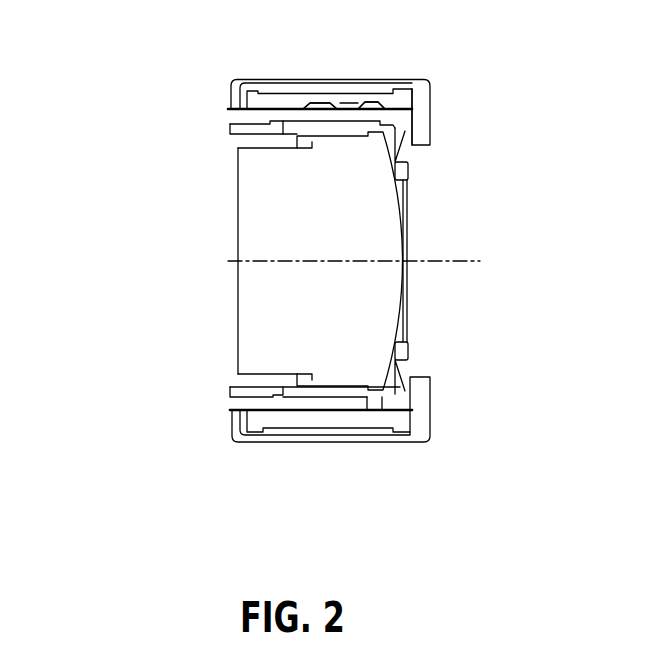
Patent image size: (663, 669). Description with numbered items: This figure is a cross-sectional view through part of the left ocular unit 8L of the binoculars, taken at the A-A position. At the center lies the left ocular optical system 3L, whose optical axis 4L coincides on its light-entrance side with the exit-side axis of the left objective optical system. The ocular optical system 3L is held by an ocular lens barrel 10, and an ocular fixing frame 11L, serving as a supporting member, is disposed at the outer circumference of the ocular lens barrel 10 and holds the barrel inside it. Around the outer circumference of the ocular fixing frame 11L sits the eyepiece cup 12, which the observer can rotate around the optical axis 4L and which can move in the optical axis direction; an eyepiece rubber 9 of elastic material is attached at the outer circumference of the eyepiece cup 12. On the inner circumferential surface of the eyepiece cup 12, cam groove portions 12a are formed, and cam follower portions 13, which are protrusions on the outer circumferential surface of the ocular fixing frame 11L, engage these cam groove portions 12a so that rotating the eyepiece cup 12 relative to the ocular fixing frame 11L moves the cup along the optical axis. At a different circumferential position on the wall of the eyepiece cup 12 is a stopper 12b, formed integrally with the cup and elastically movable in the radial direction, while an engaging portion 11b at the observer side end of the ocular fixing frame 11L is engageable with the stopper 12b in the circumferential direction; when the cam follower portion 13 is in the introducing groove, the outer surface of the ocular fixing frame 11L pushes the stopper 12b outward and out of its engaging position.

The left ocular optical system 3L is at (250, 228).
The optical axis of the left ocular optical system 4L is at (415, 265).
The left ocular unit 8L is at (183, 416).
The eyepiece rubber 9 is at (320, 432).
The ocular lens barrel 10 is at (302, 125).
The ocular fixing frame 11L is at (287, 403).
The engaging portion 11b is at (408, 180).
The eyepiece cup 12 is at (373, 425).
The cam groove portion 12a is at (359, 102).
The stopper 12b is at (413, 103).
The cam follower portion 13 is at (378, 102).